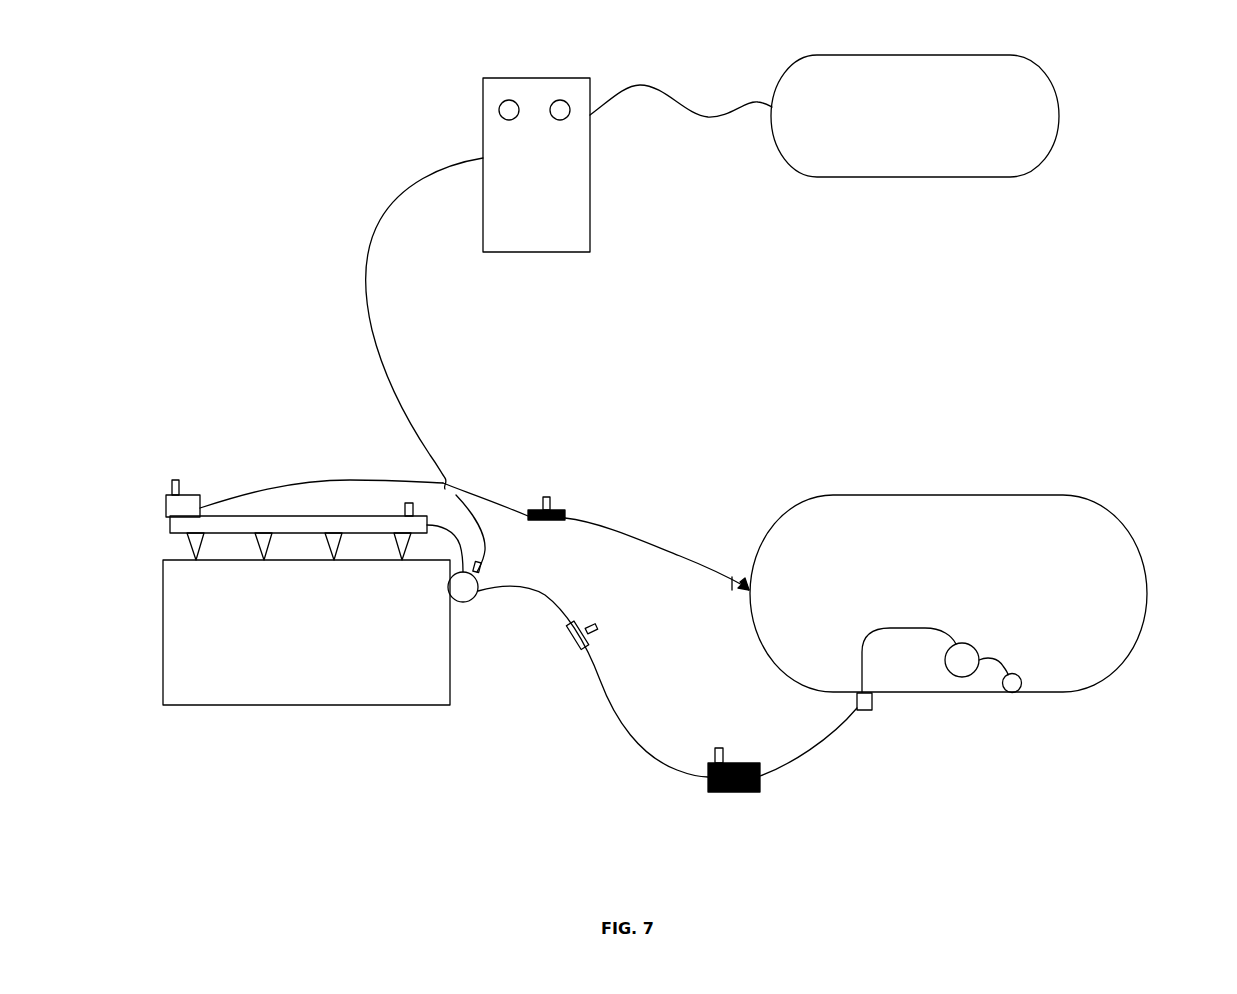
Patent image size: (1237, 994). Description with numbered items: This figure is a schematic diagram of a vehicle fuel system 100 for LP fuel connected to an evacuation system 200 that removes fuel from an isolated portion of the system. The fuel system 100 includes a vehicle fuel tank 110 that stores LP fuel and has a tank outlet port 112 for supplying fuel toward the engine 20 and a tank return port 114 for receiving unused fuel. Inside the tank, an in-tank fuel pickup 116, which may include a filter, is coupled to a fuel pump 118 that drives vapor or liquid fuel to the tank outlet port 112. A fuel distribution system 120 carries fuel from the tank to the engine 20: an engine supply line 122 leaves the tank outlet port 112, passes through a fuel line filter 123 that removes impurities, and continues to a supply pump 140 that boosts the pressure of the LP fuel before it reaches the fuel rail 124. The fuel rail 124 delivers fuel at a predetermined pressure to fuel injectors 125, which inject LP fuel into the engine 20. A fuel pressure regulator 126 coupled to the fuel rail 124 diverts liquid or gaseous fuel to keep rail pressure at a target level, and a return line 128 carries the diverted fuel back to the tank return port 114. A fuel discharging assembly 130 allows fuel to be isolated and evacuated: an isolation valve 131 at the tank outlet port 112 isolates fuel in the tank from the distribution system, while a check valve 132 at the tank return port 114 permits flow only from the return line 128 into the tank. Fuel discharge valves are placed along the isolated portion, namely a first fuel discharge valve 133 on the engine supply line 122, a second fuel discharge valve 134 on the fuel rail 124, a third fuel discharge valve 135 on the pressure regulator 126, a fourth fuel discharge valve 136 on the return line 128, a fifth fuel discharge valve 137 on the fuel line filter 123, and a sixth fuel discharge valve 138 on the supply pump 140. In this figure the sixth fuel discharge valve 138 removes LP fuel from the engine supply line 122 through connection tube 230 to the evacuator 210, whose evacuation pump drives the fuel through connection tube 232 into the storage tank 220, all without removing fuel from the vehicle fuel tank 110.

The engine 20 is at (295, 705).
The fuel system 100 is at (1100, 474).
The vehicle fuel tank 110 is at (1147, 595).
The tank outlet port 112 is at (856, 698).
The tank return port 114 is at (752, 581).
The in-tank fuel pickup 116 is at (1015, 675).
The fuel pump 118 is at (963, 643).
The fuel distribution system 120 is at (248, 449).
The engine supply line 122 is at (618, 722).
The fuel line filter 123 is at (730, 795).
The fuel rail 124 is at (280, 516).
The fuel injectors 125 is at (190, 547).
The fuel pressure regulator 126 is at (166, 505).
The return line 128 is at (333, 480).
The fuel discharging assembly 130 is at (852, 797).
The isolation valve 131 is at (873, 703).
The check valve 132 is at (733, 590).
The first fuel discharge valve 133 is at (578, 640).
The second fuel discharge valve 134 is at (409, 503).
The third fuel discharge valve 135 is at (175, 480).
The fourth fuel discharge valve 136 is at (546, 497).
The fifth fuel discharge valve 137 is at (719, 748).
The sixth fuel discharge valve 138 is at (478, 582).
The supply pump 140 is at (470, 601).
The evacuation system 200 is at (1150, 71).
The evacuator 210 is at (527, 78).
The storage tank 220 is at (1060, 105).
The connection tube 230 is at (370, 318).
The connection tube 232 is at (676, 97).